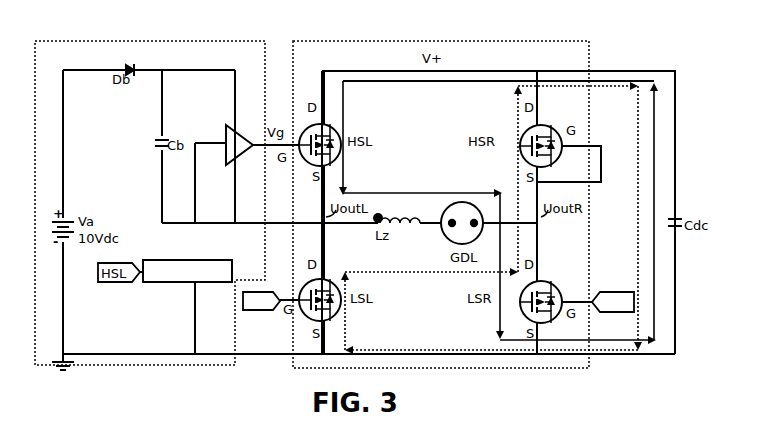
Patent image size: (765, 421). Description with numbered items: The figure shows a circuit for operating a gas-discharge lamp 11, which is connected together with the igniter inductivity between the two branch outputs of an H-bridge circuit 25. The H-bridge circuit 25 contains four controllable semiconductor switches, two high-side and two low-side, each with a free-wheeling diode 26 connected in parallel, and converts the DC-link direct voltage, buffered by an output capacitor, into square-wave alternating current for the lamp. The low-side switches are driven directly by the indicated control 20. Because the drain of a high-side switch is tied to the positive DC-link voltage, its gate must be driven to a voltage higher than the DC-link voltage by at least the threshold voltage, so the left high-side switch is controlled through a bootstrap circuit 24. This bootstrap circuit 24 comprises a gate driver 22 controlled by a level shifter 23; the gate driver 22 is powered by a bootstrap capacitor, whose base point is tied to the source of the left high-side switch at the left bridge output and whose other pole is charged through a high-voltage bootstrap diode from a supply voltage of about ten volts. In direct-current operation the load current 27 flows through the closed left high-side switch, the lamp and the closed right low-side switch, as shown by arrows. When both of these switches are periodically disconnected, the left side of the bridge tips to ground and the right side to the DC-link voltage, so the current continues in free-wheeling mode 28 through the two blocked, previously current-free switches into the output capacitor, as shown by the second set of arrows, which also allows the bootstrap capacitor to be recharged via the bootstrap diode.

The bootstrap circuit 24 is at (158, 41).
The H-bridge circuit 25 is at (468, 41).
The gate driver 22 is at (246, 142).
The level shifter 23 is at (217, 259).
The free-wheeling diodes 26 is at (336, 137).
The load current 27 is at (373, 194).
The free-wheeling mode 28 is at (442, 272).
The gas-discharge lamp 11 is at (446, 236).
The control 20 is at (260, 310).